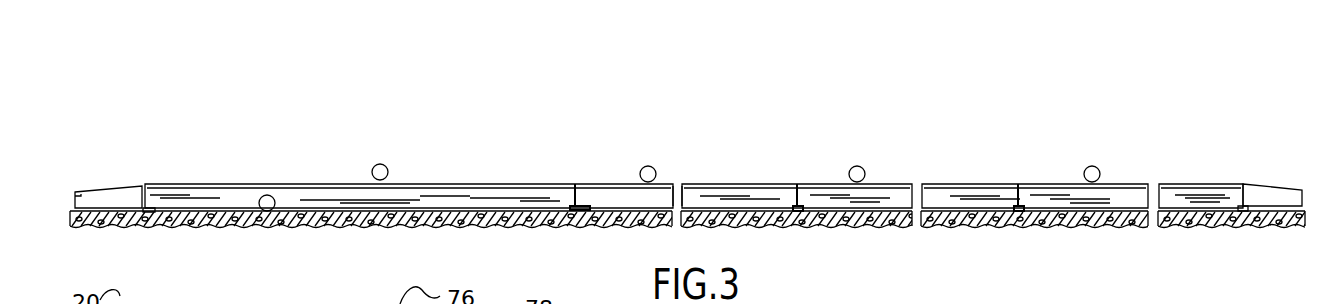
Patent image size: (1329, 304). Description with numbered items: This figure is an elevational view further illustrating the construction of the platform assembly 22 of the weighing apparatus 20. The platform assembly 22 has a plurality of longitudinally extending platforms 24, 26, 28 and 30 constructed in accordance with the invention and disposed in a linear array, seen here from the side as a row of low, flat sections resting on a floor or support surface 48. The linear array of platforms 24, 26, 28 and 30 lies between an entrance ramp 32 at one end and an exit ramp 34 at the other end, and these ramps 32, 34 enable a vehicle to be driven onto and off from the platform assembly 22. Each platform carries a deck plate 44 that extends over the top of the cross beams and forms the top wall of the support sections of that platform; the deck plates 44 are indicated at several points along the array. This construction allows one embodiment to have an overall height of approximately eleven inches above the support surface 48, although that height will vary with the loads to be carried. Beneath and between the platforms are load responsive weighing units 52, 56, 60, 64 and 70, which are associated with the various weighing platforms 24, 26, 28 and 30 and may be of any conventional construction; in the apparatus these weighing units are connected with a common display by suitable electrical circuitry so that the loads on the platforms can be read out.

The weighing apparatus 20 is at (150, 118).
The platform assembly 22 is at (808, 175).
The platform 24 is at (295, 185).
The platform 26 is at (699, 184).
The platform 28 is at (912, 184).
The platform 30 is at (1140, 184).
The entrance ramp 32 is at (118, 188).
The exit ramp 34 is at (1272, 192).
The deck plate 44 is at (378, 180).
The floor or support surface 48 is at (266, 212).
The load responsive weighing unit 52 is at (146, 228).
The load responsive weighing unit 56 is at (575, 213).
The load responsive weighing unit 60 is at (815, 215).
The load responsive weighing unit 64 is at (1020, 213).
The load responsive weighing unit 70 is at (1228, 212).